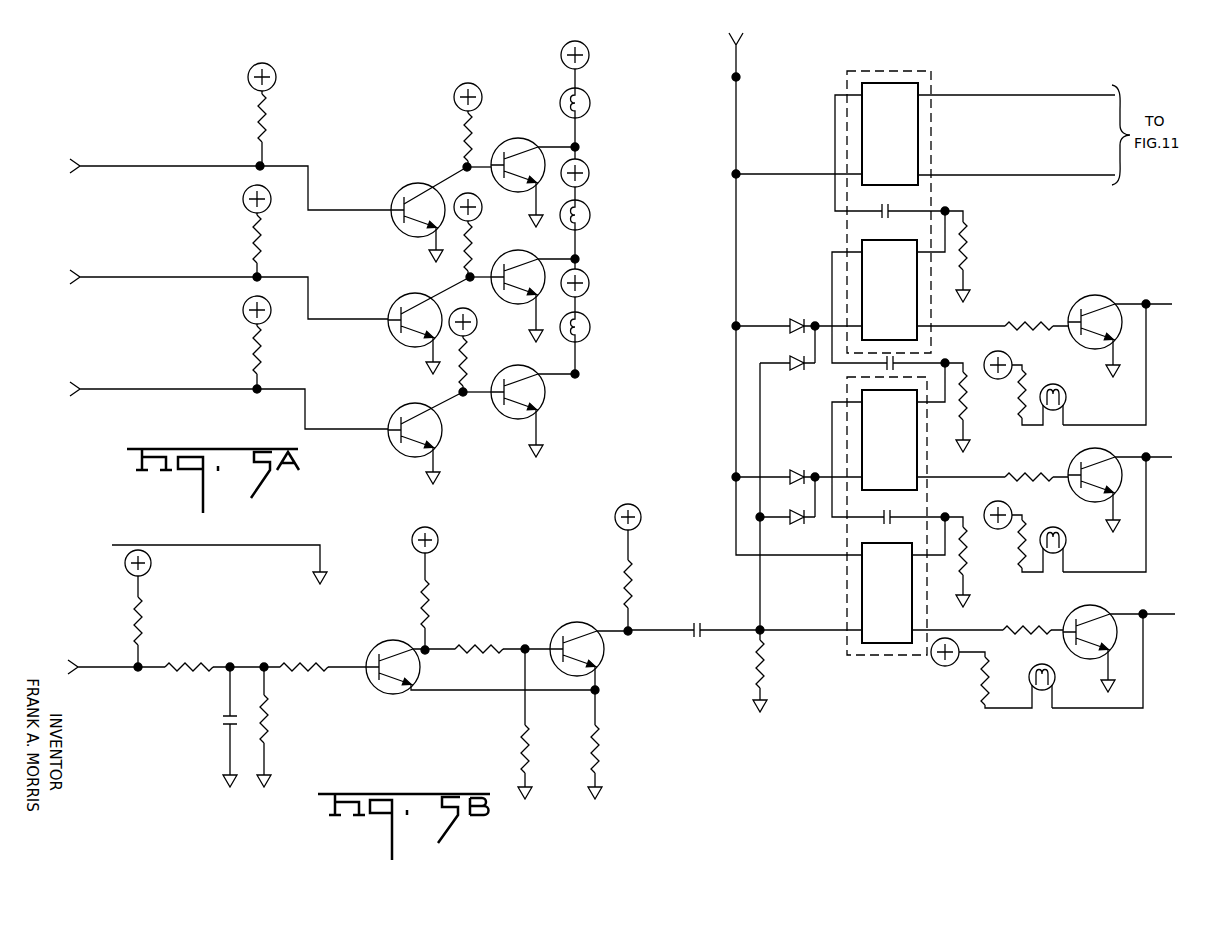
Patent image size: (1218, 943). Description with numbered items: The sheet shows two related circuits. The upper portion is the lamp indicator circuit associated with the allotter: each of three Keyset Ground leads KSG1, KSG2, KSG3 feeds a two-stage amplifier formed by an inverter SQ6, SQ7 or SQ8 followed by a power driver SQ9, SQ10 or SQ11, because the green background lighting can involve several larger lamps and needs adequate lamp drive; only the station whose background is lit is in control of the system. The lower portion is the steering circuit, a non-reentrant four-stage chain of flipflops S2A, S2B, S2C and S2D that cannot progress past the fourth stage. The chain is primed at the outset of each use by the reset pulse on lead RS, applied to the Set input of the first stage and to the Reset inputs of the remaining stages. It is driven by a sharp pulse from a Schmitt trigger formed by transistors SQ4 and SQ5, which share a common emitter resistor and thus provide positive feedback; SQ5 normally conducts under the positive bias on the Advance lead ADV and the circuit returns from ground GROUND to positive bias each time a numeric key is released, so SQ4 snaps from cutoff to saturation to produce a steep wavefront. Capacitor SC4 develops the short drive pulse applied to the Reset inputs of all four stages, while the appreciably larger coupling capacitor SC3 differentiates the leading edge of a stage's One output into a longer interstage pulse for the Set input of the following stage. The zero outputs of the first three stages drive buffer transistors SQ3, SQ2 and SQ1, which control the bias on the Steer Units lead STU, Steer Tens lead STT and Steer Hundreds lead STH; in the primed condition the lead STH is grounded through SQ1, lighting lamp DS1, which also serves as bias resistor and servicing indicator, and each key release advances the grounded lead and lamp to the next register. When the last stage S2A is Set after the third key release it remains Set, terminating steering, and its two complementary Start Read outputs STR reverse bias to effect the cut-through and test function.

In FIG. 5A, the Keyset Ground lead KSG1 is at (192, 168).
In FIG. 5A, the Keyset Ground lead KSG2 is at (192, 279).
In FIG. 5A, the Keyset Ground lead KSG3 is at (192, 391).
In FIG. 5A, the inverter SQ6 is at (433, 184).
In FIG. 5A, the inverter SQ7 is at (429, 293).
In FIG. 5A, the inverter SQ8 is at (430, 403).
In FIG. 5A, the power driver SQ9 is at (538, 140).
In FIG. 5A, the power driver SQ10 is at (540, 254).
In FIG. 5A, the power driver SQ11 is at (540, 367).
In FIG. 5A, the reset lead RS is at (730, 75).
In FIG. 5A, the flipflop S2A is at (866, 126).
In FIG. 5A, the flipflop S2B is at (866, 284).
In FIG. 5A, the flipflop S2C is at (866, 435).
In FIG. 5A, the flipflop S2D is at (866, 592).
In FIG. 5A, the coupling capacitor SC3 is at (888, 513).
In FIG. 5A, the capacitor SC4 is at (699, 621).
In FIG. 5A, the Start Read lead STR is at (1098, 95).
In FIG. 5A, the Steer Units lead STU is at (1144, 304).
In FIG. 5A, the Steer Tens lead STT is at (1144, 457).
In FIG. 5A, the Steer Hundreds lead STH is at (1142, 614).
In FIG. 5A, the buffer gate transistor SQ3 is at (1112, 299).
In FIG. 5A, the buffer gate transistor SQ2 is at (1112, 453).
In FIG. 5A, the buffer transistor SQ1 is at (1106, 610).
In FIG. 5A, the lamp DS1 is at (1046, 671).
In FIG. 5B, the ground lead GROUND is at (206, 545).
In FIG. 5B, the Advance lead ADV is at (131, 666).
In FIG. 5B, the Schmitt trigger transistor SQ5 is at (409, 642).
In FIG. 5B, the Schmitt trigger transistor SQ4 is at (592, 622).